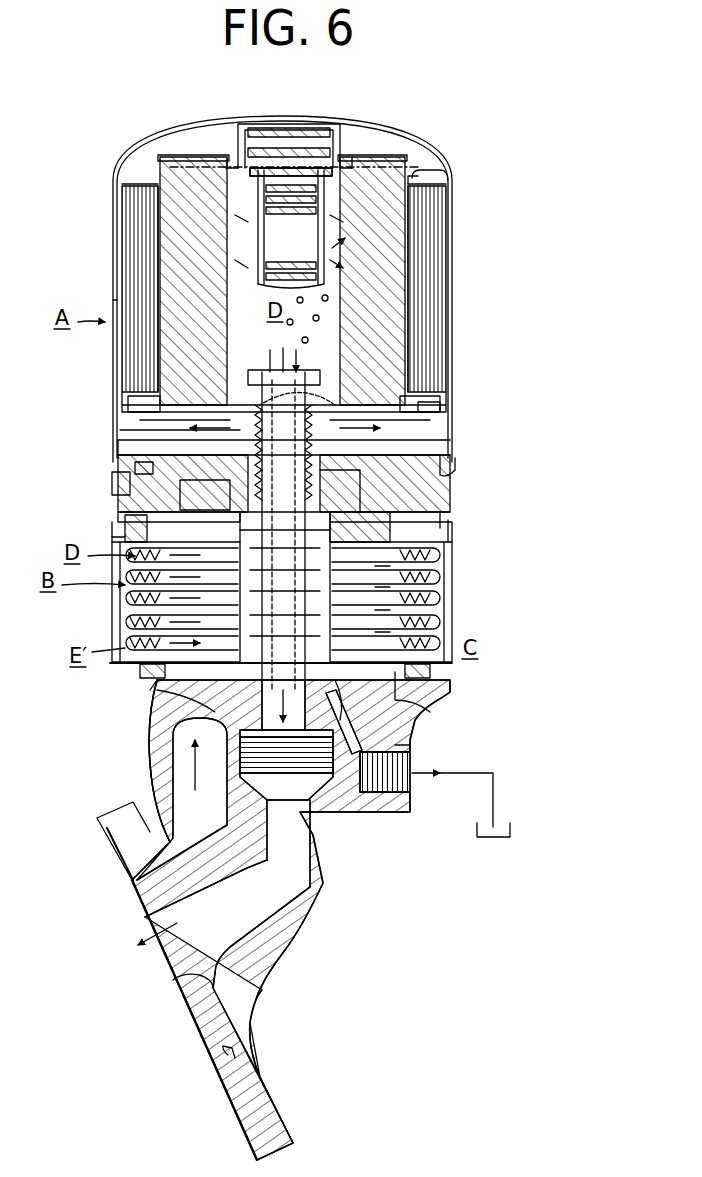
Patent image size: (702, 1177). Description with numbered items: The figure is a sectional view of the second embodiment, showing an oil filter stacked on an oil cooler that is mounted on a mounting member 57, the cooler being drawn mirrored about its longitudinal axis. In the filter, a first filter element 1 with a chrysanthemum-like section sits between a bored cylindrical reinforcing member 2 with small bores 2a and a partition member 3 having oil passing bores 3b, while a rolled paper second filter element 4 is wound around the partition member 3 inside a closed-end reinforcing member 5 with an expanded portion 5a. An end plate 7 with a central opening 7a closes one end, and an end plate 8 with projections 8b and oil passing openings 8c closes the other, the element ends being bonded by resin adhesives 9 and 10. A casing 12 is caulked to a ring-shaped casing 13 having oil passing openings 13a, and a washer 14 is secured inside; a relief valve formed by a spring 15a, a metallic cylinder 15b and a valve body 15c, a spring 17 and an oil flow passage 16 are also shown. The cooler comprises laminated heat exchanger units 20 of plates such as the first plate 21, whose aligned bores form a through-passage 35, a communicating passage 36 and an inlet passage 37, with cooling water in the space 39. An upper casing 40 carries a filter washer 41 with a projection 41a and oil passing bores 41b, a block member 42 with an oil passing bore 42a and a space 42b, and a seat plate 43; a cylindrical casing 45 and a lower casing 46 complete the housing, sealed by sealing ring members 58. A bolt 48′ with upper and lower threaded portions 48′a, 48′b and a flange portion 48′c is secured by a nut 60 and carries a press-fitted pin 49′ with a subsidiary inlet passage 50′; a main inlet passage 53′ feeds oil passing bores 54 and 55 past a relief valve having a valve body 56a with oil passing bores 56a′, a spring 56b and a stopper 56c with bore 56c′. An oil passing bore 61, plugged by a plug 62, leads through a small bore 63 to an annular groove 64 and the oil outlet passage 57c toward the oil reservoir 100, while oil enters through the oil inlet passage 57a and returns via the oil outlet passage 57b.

The first filter element 1 is at (408, 246).
The reinforcing member 2 is at (290, 241).
The small bores 2a is at (295, 345).
The partition member 3 is at (440, 278).
The oil passing bores 3b is at (412, 178).
The second filter element 4 is at (445, 292).
The reinforcing member 5 is at (452, 314).
The expanded portion 5a is at (420, 440).
The end plate 7 is at (372, 162).
The opening 7a is at (285, 180).
The end plate 8 is at (395, 392).
The projections 8b is at (230, 402).
The oil passing openings 8c is at (428, 408).
The resin adhesive 9 is at (205, 170).
The resin adhesive 10 is at (128, 386).
The casing 12 is at (455, 332).
The casing 13 is at (445, 470).
The oil passing openings 13a is at (380, 484).
The washer 14 is at (118, 446).
The spring 15a is at (272, 186).
The metallic cylinder 15b is at (322, 200).
The valve body 15c is at (305, 186).
The oil flow passage 16 is at (118, 352).
The spring 17 is at (236, 150).
The heat exchanger units 20 is at (447, 560).
The first plate 21 is at (436, 172).
The through-passage 35 is at (445, 612).
The communicating passage 36 is at (445, 585).
The inlet passage 37 is at (125, 612).
The space 39 is at (125, 632).
The upper casing 40 is at (450, 540).
The filter washer 41 is at (125, 516).
The ring-shaped projection 41a is at (132, 500).
The oil passing bores 41b is at (112, 482).
The block member 42 is at (125, 530).
The oil passing bore 42a is at (448, 526).
The space 42b is at (112, 538).
The seat plate 43 is at (149, 526).
The cylindrical casing 45 is at (445, 630).
The lower casing 46 is at (430, 668).
The bolt 48′ is at (170, 760).
The upper threaded portion 48′a is at (318, 432).
The lower threaded portion 48′b is at (410, 745).
The flange portion 48′c is at (150, 690).
The pin 49′ is at (258, 370).
The subsidiary inlet passage 50′ is at (258, 470).
The main inlet passage 53′ is at (262, 340).
The oil passing bores 54 is at (285, 587).
The oil passing bores 55 is at (348, 698).
The valve body 56a is at (360, 527).
The oil passing bores 56a′ is at (420, 700).
The spring 56b is at (170, 705).
The stopper 56c is at (328, 732).
The oil passing bore 56c′ is at (296, 716).
The mounting member 57 is at (375, 812).
The oil inlet passage 57a is at (180, 838).
The oil outlet passage 57b is at (256, 1010).
The oil outlet passage 57c is at (412, 770).
The sealing ring members 58 is at (136, 468).
The nut 60 is at (205, 490).
The oil passing bore 61 is at (200, 555).
The plug 62 is at (200, 777).
The small bore 63 is at (175, 738).
The annular groove 64 is at (380, 740).
The oil reservoir 100 is at (520, 828).